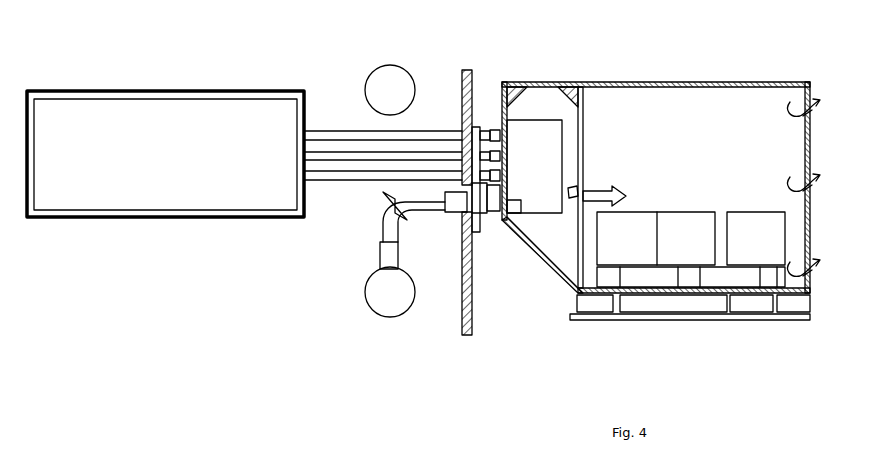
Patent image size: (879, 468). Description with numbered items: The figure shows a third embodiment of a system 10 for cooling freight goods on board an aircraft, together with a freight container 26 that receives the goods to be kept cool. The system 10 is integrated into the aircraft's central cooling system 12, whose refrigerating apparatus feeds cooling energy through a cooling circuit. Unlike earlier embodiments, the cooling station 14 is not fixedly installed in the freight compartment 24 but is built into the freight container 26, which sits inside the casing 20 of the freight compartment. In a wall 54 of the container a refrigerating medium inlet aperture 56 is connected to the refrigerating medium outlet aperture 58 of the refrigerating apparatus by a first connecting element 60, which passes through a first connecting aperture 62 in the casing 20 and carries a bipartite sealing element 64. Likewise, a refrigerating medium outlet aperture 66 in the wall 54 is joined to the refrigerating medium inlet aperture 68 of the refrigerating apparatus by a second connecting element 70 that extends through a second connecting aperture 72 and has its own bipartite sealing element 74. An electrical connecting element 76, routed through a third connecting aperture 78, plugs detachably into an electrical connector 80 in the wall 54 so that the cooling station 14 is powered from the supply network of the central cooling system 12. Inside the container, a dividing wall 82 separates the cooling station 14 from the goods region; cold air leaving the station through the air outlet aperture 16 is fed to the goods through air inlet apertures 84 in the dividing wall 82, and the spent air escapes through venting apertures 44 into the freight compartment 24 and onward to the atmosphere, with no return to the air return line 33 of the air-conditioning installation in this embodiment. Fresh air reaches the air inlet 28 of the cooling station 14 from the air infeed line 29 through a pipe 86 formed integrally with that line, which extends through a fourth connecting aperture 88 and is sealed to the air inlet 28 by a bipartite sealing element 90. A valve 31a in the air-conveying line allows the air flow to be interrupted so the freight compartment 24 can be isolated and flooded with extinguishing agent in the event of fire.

The system for cooling freight goods on board an aircraft 10 is at (250, 47).
The central cooling system 12 is at (100, 86).
The cooling station 14 is at (550, 178).
The air outlet aperture 16 is at (568, 202).
The casing of the freight compartment 20 is at (462, 318).
The freight compartment 24 is at (689, 74).
The freight container 26 is at (728, 82).
The air inlet of the cooling station 28 is at (516, 214).
The air infeed line 29 is at (366, 292).
The valve 31a is at (404, 220).
The air return line 33 is at (390, 65).
The venting apertures 44 is at (812, 120).
The wall of the freight container 54 is at (507, 88).
The refrigerating medium inlet aperture 56 is at (510, 148).
The refrigerating medium outlet aperture of the refrigerating apparatus 58 is at (308, 175).
The first connecting element 60 is at (326, 156).
The first connecting aperture 62 is at (476, 150).
The sealing element 64 is at (478, 125).
The refrigerating medium outlet aperture 66 is at (508, 120).
The refrigerating medium inlet aperture of the refrigerating apparatus 68 is at (314, 131).
The second connecting element 70 is at (348, 152).
The second connecting aperture 72 is at (466, 131).
The sealing element 74 is at (492, 129).
The electrical connecting element 76 is at (388, 190).
The third connecting aperture 78 is at (462, 150).
The electrical connector 80 is at (484, 214).
The dividing wall 82 is at (584, 132).
The air inlet apertures 84 is at (594, 190).
The pipe 86 is at (380, 230).
The fourth connecting aperture 88 is at (458, 214).
The sealing element 90 is at (494, 214).